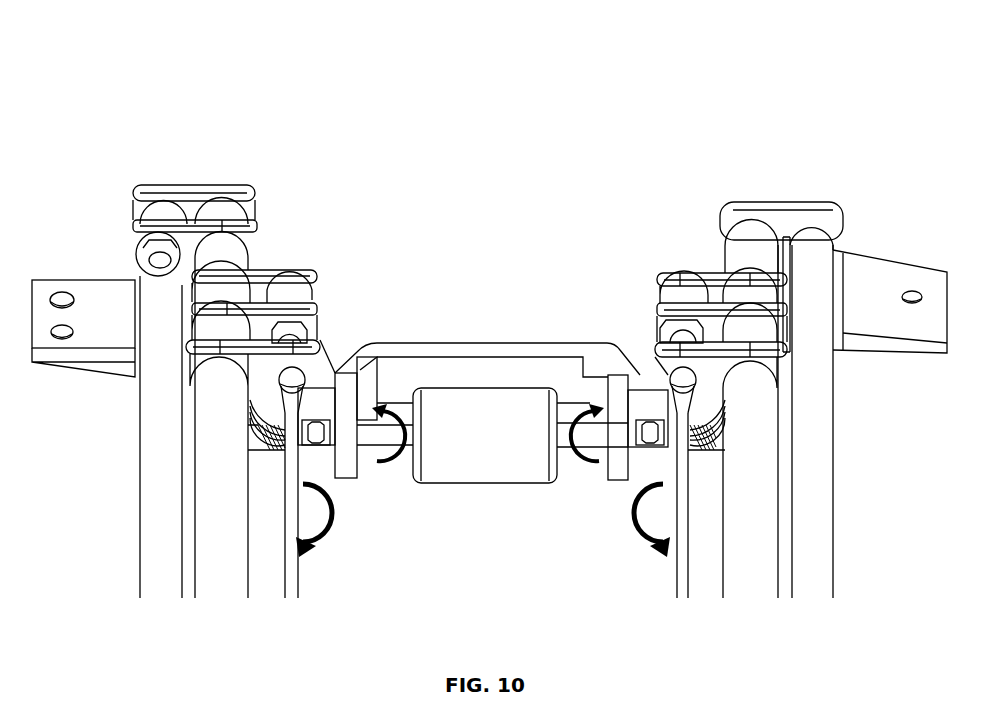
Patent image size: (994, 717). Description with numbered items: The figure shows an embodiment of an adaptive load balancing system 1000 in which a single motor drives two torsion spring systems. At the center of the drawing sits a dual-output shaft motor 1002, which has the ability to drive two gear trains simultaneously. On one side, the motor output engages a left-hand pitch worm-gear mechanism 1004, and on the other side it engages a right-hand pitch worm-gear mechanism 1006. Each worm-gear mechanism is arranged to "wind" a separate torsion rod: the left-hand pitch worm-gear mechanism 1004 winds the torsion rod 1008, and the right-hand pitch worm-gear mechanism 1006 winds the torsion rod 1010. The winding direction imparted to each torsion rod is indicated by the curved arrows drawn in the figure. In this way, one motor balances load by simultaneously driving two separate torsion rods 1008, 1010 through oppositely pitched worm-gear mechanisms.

The adaptive load balancing system 1000 is at (235, 102).
The dual-output shaft motor 1002 is at (488, 388).
The left-hand pitch worm-gear mechanism 1004 is at (648, 380).
The right-hand pitch worm-gear mechanism 1006 is at (327, 380).
The torsion rod 1008 is at (680, 578).
The torsion rod 1010 is at (293, 580).